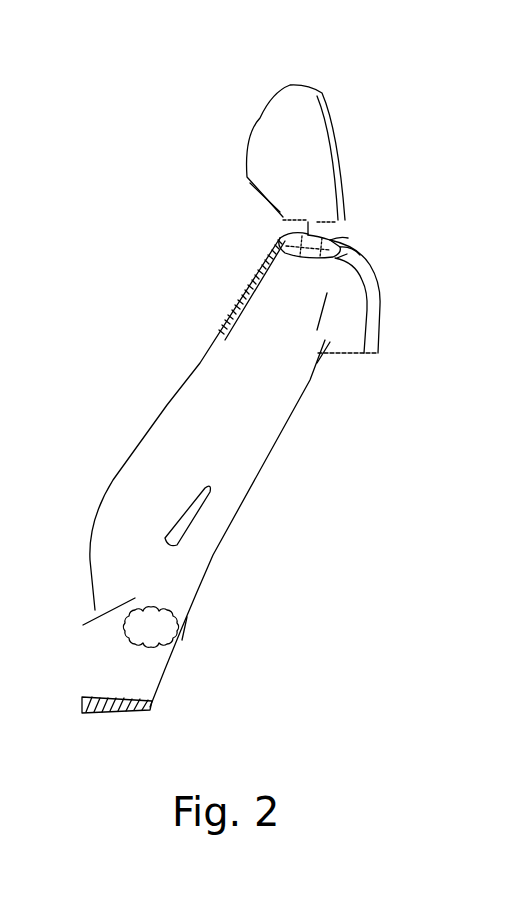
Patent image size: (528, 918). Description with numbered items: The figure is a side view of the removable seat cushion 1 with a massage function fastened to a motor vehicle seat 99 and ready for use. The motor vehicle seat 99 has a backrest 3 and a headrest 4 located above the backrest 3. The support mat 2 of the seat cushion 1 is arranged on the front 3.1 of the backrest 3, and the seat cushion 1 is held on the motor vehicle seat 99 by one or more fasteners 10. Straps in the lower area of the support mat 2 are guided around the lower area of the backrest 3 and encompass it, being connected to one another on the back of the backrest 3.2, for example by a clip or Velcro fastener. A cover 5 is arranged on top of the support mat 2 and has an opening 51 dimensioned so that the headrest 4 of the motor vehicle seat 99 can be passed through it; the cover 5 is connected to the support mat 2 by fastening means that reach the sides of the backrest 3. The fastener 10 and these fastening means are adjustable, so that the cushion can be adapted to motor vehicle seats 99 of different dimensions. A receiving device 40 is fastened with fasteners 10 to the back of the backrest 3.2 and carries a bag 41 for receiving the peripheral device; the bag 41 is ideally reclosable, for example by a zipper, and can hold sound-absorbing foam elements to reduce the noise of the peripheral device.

The seat cushion 1 is at (363, 235).
The fastener 10 is at (340, 230).
The support mat 2 is at (250, 277).
The backrest 3 is at (207, 475).
The front of the backrest 3.1 is at (163, 403).
The back of the backrest 3.2 is at (257, 468).
The headrest 4 is at (290, 108).
The receiving device 40 is at (395, 272).
The bag 41 is at (350, 318).
The cover 5 is at (278, 233).
The opening 51 is at (303, 233).
The motor vehicle seat 99 is at (240, 48).